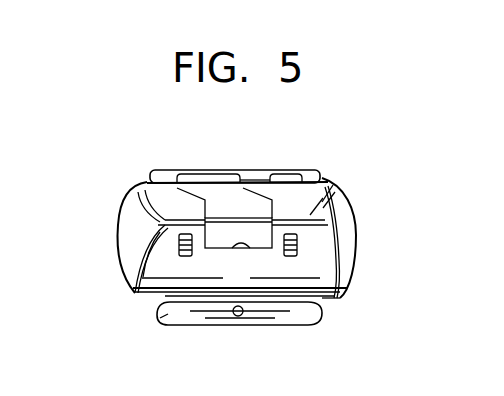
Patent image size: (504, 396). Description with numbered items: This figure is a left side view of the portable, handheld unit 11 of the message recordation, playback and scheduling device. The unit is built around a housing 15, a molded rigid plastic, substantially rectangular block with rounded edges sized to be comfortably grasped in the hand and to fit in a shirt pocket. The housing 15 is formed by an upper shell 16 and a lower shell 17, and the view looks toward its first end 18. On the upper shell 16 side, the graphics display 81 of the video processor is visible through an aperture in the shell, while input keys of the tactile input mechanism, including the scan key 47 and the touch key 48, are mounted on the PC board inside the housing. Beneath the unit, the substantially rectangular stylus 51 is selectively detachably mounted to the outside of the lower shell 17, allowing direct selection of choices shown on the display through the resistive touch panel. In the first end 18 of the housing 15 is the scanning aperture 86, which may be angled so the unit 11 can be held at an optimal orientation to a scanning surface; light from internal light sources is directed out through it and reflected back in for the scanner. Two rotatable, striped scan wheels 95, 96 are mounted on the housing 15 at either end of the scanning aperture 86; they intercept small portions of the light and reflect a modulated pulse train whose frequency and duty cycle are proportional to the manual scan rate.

The portable unit 11 is at (119, 169).
The housing 15 is at (358, 254).
The upper shell 16 is at (323, 178).
The lower shell 17 is at (327, 300).
The first end 18 is at (173, 236).
The scan key 47 is at (212, 172).
The touch key 48 is at (289, 177).
The stylus 51 is at (170, 317).
The graphics display 81 is at (249, 178).
The scanning aperture 86 is at (246, 252).
The scan wheel 95 is at (300, 242).
The scan wheel 96 is at (140, 289).